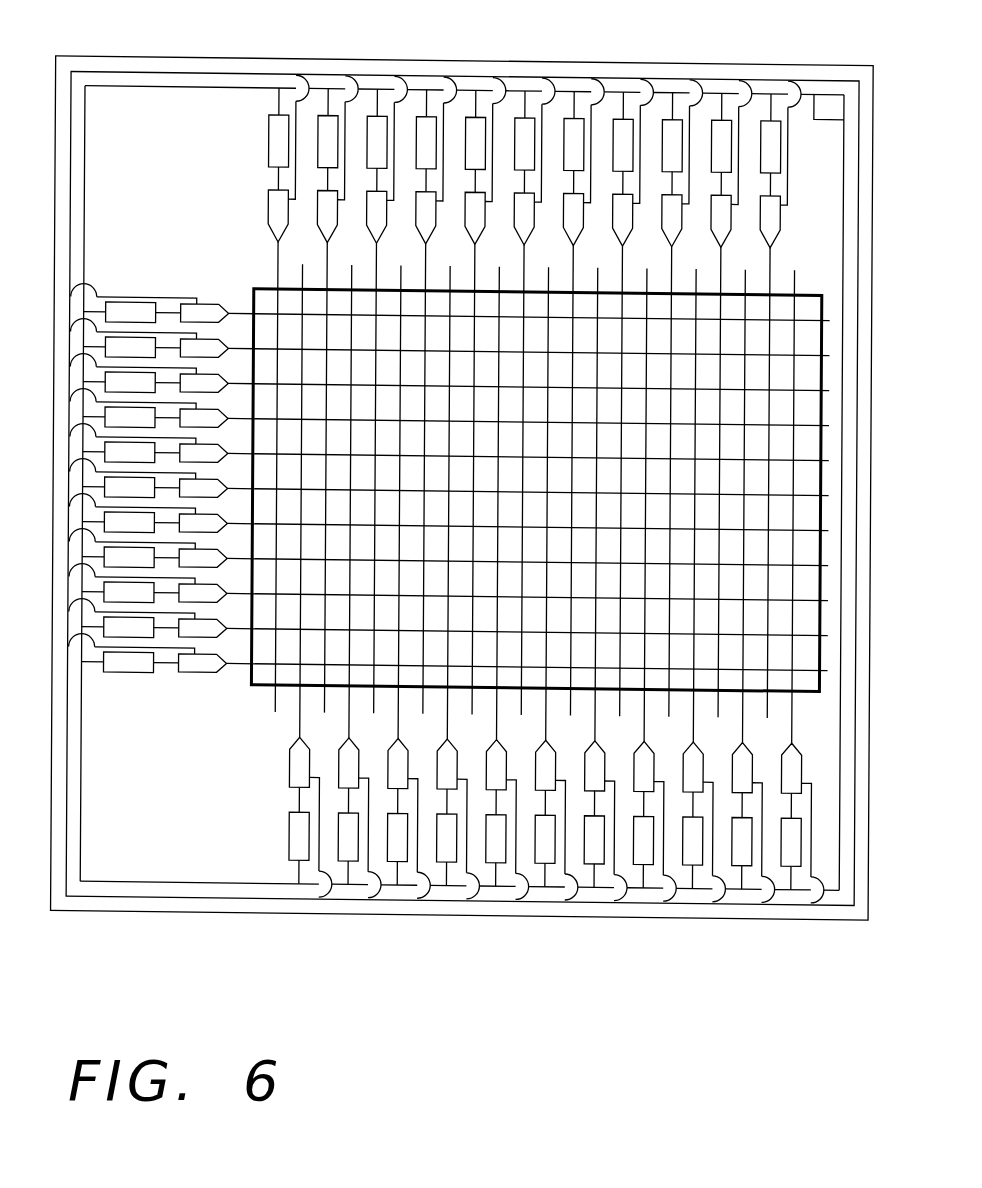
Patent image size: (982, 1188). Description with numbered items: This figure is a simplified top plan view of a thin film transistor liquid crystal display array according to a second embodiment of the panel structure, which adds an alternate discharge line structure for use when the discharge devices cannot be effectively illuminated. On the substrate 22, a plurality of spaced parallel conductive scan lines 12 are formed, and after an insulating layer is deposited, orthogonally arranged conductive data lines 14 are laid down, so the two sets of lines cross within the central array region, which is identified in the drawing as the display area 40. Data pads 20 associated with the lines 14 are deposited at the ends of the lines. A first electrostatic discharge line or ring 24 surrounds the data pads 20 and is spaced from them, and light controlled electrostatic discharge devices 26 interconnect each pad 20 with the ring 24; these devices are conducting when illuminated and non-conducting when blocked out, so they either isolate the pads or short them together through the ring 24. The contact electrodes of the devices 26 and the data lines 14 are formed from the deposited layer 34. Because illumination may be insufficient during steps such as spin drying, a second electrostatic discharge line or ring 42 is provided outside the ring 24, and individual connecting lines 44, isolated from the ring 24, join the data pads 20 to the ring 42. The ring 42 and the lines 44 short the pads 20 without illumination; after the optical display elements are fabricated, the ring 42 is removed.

The scan lines 12 is at (236, 303).
The data lines 14 is at (279, 256).
The data pads 20 is at (279, 222).
The substrate 22 is at (653, 66).
The electrostatic discharge line 24 is at (434, 78).
The light controlled electrostatic discharge devices 26 is at (280, 150).
The layer 34 is at (278, 100).
The display matrix area 40 is at (812, 285).
The second electrostatic discharge line 42 is at (330, 72).
The connecting lines 44 is at (97, 296).